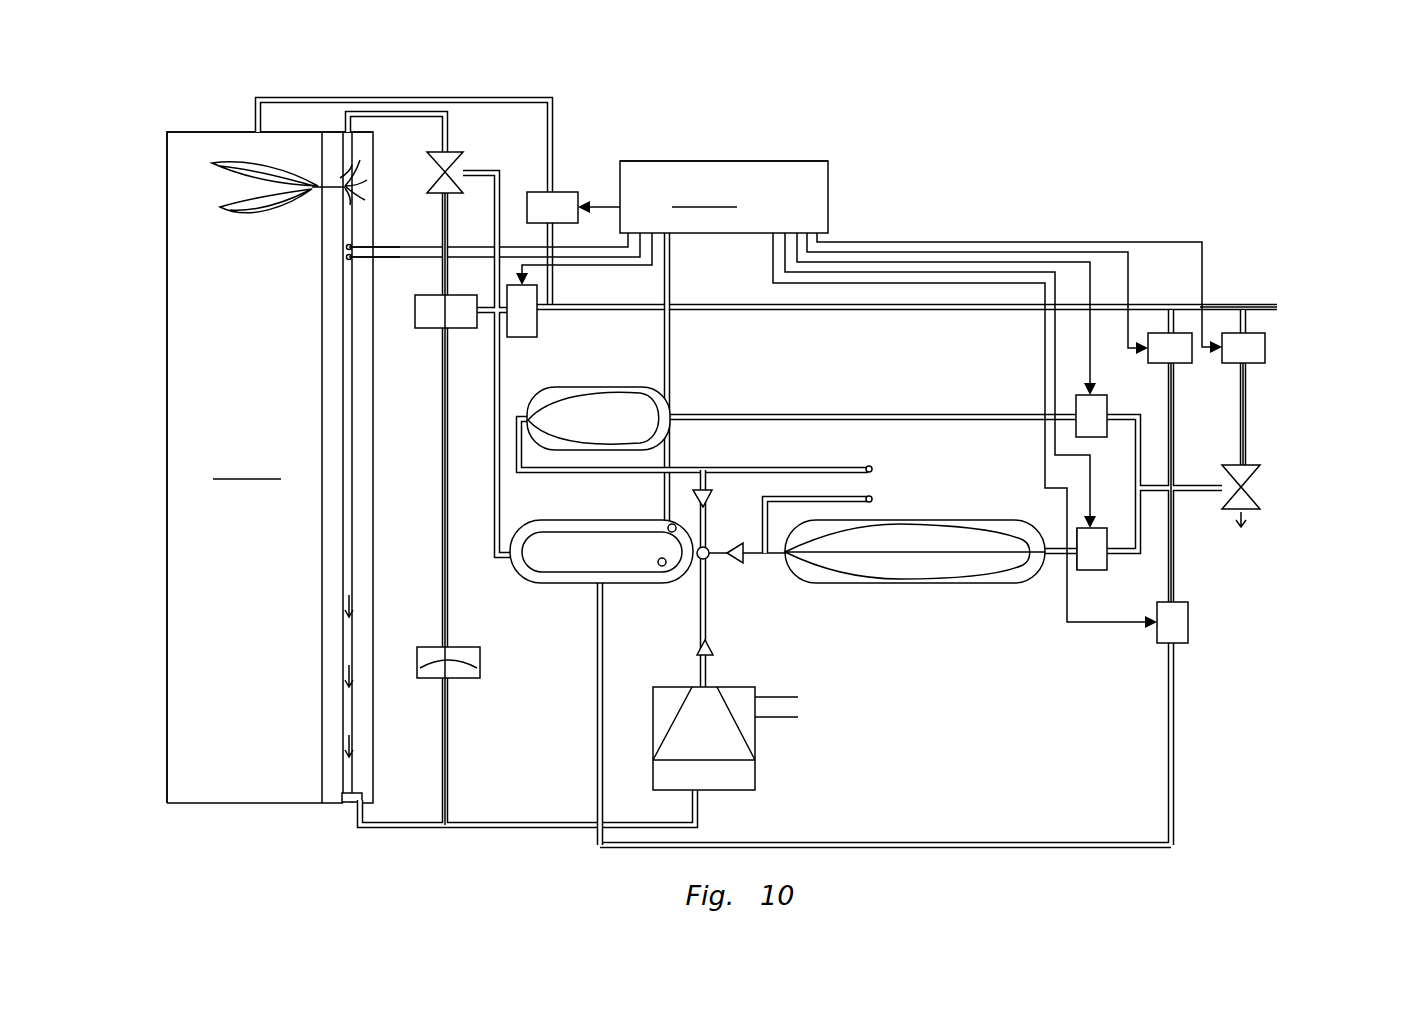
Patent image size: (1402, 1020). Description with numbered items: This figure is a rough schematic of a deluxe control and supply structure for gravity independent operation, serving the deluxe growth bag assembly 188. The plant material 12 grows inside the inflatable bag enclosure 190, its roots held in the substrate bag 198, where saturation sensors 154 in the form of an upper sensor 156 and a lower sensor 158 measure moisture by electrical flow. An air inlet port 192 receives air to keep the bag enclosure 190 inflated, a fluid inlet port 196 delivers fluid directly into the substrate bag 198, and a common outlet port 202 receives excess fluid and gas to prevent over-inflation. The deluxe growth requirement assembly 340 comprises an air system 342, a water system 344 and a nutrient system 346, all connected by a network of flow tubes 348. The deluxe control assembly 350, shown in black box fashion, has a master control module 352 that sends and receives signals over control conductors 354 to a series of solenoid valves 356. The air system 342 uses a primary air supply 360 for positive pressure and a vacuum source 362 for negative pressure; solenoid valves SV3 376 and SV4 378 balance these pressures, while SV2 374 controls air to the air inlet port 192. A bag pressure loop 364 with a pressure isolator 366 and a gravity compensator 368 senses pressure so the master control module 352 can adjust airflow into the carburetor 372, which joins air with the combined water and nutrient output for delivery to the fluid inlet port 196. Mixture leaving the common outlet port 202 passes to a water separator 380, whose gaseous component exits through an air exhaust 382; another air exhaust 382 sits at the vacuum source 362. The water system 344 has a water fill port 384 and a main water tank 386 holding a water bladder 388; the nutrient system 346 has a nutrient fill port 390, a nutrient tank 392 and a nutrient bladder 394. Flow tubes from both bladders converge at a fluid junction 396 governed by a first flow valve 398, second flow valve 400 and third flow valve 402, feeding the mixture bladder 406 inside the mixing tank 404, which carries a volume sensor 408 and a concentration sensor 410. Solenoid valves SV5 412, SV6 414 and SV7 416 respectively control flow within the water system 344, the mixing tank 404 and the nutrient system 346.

The plant material 12 is at (258, 222).
The saturation sensors 154 is at (347, 252).
The upper sensor 156 is at (349, 247).
The lower sensor 158 is at (349, 257).
The deluxe growth bag assembly 188 is at (156, 328).
The bag enclosure 190 is at (270, 467).
The air inlet port 192 is at (258, 128).
The fluid inlet port 196 is at (350, 113).
The substrate bag 198 is at (365, 512).
The common outlet port 202 is at (355, 803).
The deluxe growth requirement assembly 340 is at (876, 602).
The air system 342 is at (1268, 415).
The water system 344 is at (978, 506).
The nutrient system 346 is at (572, 366).
The flow tubes 348 is at (553, 100).
The deluxe control assembly 350 is at (860, 147).
The master control module 352 is at (724, 197).
The control conductors 354 is at (1035, 258).
The solenoid valves 356 is at (1148, 345).
The primary air supply 360 is at (1278, 307).
The vacuum source 362 is at (1255, 487).
The bag pressure loop 364 is at (470, 606).
The pressure isolator 366 is at (472, 657).
The gravity compensator 368 is at (440, 312).
The carburetor 372 is at (455, 163).
The solenoid valve SV2 374 is at (565, 200).
The solenoid valve SV3 376 is at (1250, 348).
The solenoid valve SV4 378 is at (1185, 363).
The water separator 380 is at (755, 777).
The air exhaust 382 is at (795, 705).
The water fill port 384 is at (872, 500).
The main water tank 386 is at (1033, 575).
The water bladder 388 is at (940, 560).
The nutrient fill port 390 is at (872, 466).
The nutrient tank 392 is at (530, 420).
The nutrient bladder 394 is at (610, 418).
The fluid junction 396 is at (707, 600).
The first flow valve 398 is at (705, 488).
The second flow valve 400 is at (742, 560).
The third flow valve 402 is at (712, 650).
The mixing tank 404 is at (570, 581).
The mixture bladder 406 is at (600, 598).
The volume sensor 408 is at (672, 525).
The concentration sensor 410 is at (662, 566).
The solenoid valve SV5 412 is at (1093, 570).
The solenoid valve SV6 414 is at (1076, 412).
The solenoid valve SV7 416 is at (1190, 620).